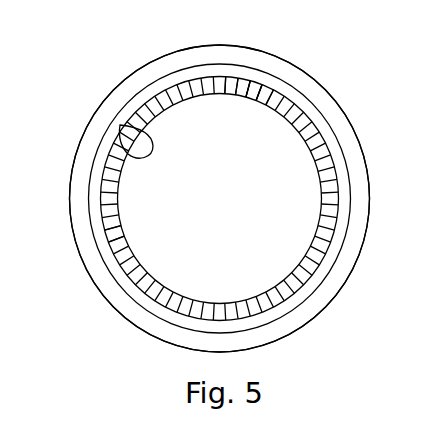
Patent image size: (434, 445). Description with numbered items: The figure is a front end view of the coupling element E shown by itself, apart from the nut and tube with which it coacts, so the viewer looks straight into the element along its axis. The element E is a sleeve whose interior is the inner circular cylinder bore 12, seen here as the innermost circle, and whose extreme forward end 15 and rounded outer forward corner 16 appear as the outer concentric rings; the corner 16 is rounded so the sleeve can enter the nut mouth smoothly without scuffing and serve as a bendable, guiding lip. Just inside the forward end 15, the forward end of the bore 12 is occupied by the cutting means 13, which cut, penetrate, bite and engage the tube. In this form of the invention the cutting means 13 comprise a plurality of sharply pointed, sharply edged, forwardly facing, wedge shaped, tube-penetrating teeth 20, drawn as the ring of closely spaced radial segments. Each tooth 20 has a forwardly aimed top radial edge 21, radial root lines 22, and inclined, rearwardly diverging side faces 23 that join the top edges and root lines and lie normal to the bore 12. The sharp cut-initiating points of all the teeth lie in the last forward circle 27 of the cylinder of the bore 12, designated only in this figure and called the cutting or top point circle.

The inner circular cylinder bore 12 is at (320, 188).
The cutting means 13 is at (152, 273).
The forward end 15 is at (338, 264).
The rounded outer forward corner 16 is at (301, 300).
The tube-penetrating teeth 20 is at (120, 233).
The top radial edge 21 is at (201, 166).
The radial root lines 22 is at (250, 97).
The side faces 23 is at (258, 90).
The top point circle 27 is at (120, 125).
The coupling element E is at (84, 268).